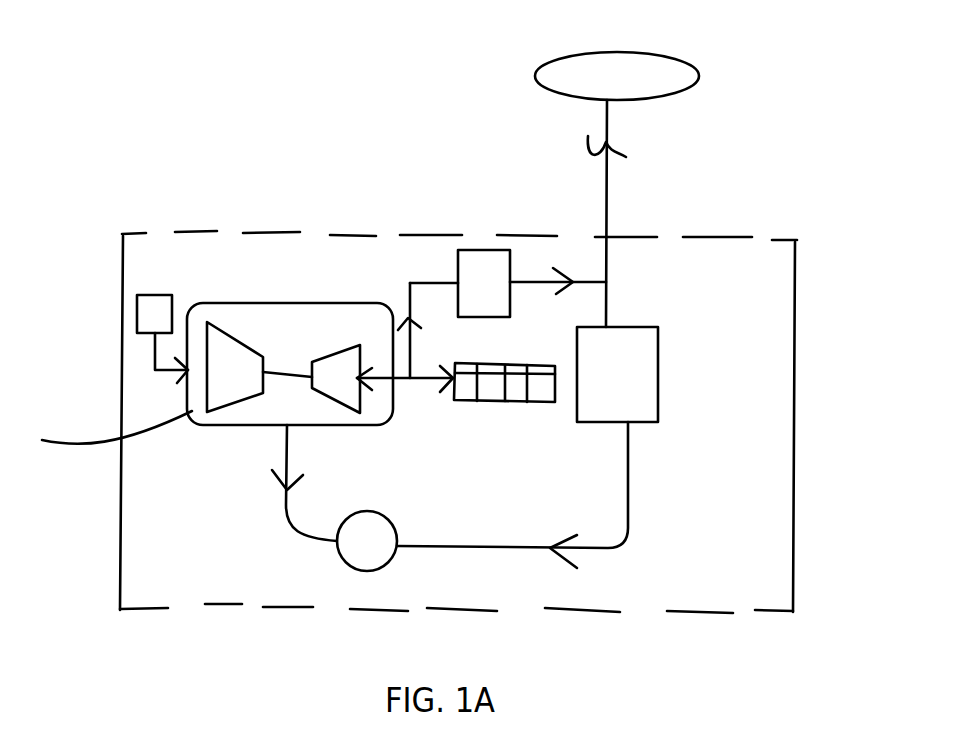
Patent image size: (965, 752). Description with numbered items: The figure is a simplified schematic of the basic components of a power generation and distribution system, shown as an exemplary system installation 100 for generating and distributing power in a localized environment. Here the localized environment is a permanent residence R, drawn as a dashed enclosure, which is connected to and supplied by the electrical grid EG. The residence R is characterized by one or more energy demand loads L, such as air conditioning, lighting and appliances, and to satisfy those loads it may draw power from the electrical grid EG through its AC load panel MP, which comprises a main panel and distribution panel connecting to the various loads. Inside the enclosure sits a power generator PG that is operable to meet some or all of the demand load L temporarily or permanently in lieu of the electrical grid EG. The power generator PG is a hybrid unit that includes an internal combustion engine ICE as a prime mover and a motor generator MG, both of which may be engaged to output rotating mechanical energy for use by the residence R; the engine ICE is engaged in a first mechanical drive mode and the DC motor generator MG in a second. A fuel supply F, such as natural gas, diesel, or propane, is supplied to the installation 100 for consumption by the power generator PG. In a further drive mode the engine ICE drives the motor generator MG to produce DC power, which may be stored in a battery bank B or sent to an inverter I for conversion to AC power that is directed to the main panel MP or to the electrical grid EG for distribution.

The system installation 100 is at (840, 186).
The residence R is at (793, 388).
The electrical grid EG is at (617, 189).
The inverter I is at (484, 283).
The battery bank B is at (501, 362).
The AC load panel MP is at (617, 374).
The energy demand load L is at (386, 555).
The internal combustion engine ICE is at (228, 328).
The motor generator MG is at (326, 360).
The fuel supply F is at (162, 339).
The power generator PG is at (101, 427).